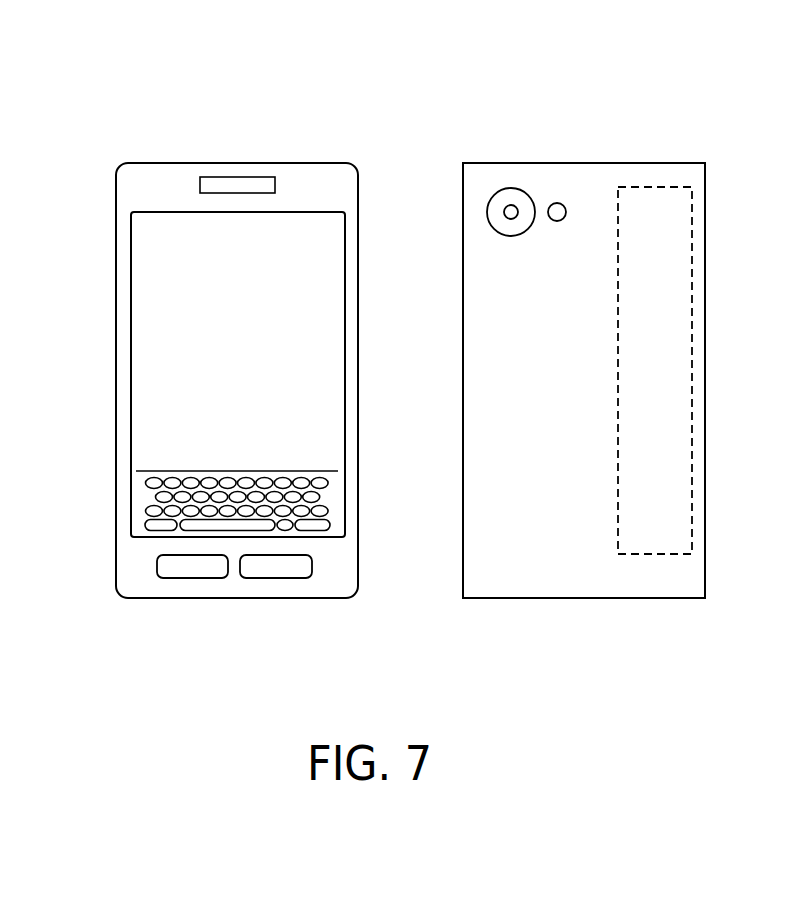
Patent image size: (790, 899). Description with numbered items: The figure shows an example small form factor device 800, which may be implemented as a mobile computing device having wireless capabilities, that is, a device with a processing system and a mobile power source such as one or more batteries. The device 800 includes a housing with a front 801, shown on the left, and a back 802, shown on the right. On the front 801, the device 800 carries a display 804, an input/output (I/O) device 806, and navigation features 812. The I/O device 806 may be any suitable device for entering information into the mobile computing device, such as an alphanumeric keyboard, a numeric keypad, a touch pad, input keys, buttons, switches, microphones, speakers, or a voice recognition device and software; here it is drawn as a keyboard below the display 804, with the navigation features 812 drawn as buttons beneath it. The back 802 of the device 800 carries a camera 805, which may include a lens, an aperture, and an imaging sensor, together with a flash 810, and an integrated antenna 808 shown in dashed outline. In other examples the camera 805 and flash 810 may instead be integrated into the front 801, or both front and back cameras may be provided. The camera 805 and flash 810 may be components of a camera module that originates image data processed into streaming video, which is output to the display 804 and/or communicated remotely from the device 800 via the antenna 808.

The small form factor device 800 is at (74, 34).
The front 801 is at (216, 156).
The back 802 is at (511, 157).
The display 804 is at (252, 386).
The camera 805 is at (490, 200).
The input/output (I/O) device 806 is at (138, 500).
The integrated antenna 808 is at (669, 383).
The flash 810 is at (565, 207).
The navigation features 812 is at (173, 570).